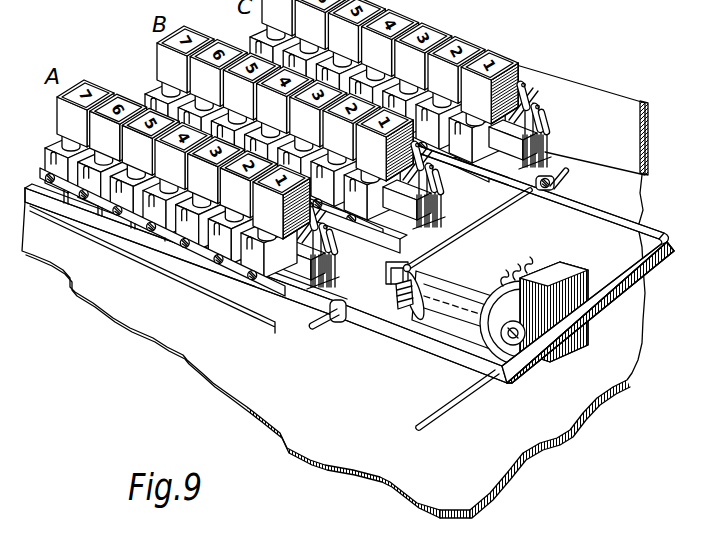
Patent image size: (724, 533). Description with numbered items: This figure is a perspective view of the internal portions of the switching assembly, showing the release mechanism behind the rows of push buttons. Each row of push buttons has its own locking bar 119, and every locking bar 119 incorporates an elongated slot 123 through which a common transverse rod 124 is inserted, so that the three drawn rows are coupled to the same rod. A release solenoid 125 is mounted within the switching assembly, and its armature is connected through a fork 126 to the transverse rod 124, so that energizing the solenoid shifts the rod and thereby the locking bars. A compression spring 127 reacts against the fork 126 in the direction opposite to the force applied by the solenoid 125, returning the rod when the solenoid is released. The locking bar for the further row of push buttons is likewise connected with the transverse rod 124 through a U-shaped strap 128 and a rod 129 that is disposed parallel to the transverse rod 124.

The locking bar 119 is at (531, 176).
The elongated slot 123 is at (338, 322).
The transverse rod 124 is at (463, 236).
The release solenoid 125 is at (457, 313).
The fork 126 is at (496, 267).
The compression spring 127 is at (403, 304).
The U-shaped strap 128 is at (577, 206).
The rod 129 is at (460, 397).